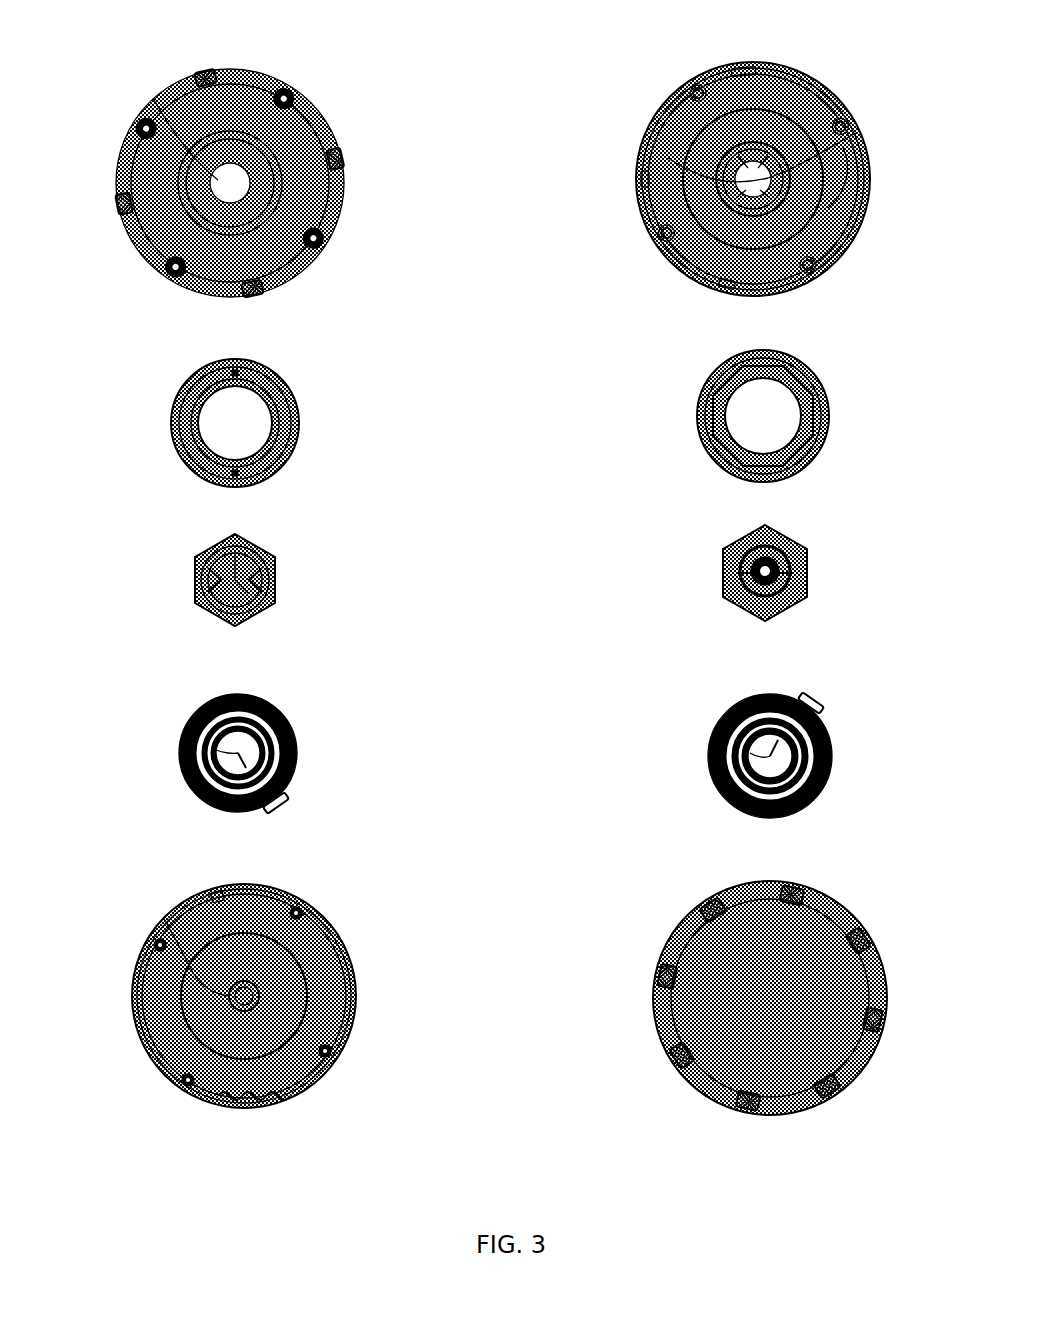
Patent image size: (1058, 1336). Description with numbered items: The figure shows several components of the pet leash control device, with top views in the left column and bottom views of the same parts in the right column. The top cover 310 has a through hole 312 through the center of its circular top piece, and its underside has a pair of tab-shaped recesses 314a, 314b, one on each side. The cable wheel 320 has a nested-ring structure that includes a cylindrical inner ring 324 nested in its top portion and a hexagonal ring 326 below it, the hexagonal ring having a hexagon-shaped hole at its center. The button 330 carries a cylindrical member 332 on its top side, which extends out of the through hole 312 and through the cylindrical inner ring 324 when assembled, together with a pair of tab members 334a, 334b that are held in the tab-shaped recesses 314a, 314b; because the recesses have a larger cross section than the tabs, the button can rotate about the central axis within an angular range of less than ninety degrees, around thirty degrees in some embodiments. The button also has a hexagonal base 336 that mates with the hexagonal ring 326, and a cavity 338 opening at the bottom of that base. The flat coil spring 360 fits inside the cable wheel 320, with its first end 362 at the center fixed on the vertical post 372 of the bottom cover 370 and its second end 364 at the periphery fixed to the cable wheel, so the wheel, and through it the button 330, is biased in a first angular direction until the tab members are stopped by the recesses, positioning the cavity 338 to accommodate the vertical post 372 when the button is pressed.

The top cover 310 is at (618, 168).
The through hole 312 is at (145, 90).
The tab-shaped recess 314a is at (710, 168).
The tab-shaped recess 314b is at (848, 125).
The cable wheel 320 is at (650, 410).
The cylindrical inner ring 324 is at (181, 378).
The hexagonal ring 326 is at (825, 378).
The button 330 is at (665, 570).
The cylindrical member 332 is at (207, 543).
The tab member 334a is at (190, 562).
The tab member 334b is at (266, 555).
The hexagonal base 336 is at (187, 596).
The cavity 338 is at (798, 588).
The flat coil spring 360 is at (647, 738).
The first end 362 is at (176, 715).
The second end 364 is at (282, 790).
The bottom cover 370 is at (612, 925).
The vertical post 372 is at (156, 911).